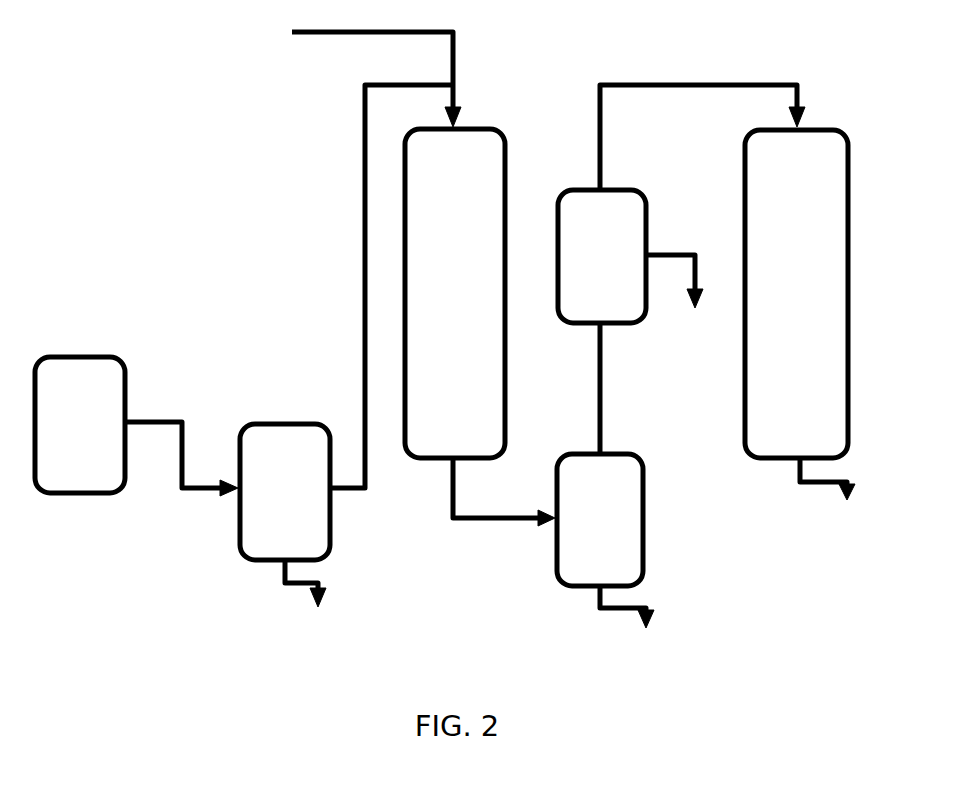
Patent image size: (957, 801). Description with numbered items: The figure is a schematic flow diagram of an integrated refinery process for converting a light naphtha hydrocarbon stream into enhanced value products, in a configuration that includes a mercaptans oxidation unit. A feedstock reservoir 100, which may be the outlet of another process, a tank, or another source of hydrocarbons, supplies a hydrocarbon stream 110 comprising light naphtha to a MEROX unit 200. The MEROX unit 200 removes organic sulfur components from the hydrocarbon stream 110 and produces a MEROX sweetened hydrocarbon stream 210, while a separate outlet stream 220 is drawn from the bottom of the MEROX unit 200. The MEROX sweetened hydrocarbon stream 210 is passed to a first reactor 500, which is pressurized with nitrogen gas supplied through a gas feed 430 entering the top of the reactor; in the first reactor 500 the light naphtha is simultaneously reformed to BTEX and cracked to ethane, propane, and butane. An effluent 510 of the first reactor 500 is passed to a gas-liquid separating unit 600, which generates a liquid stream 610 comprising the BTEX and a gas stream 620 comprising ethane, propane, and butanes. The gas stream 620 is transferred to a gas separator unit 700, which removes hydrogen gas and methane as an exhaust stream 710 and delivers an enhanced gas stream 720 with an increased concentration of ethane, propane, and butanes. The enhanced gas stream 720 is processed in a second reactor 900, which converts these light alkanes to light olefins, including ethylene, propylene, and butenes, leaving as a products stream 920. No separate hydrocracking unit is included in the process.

The feedstock reservoir 100 is at (80, 425).
The hydrocarbon stream 110 is at (181, 479).
The mercaptans oxidation (MEROX) unit 200 is at (285, 492).
The MEROX sweetened hydrocarbon stream 210 is at (382, 286).
The first bottom stream 220 is at (311, 602).
The gas feed 430 is at (348, 75).
The first reactor 500 is at (455, 293).
The effluent 510 is at (504, 509).
The gas-liquid separating unit 600 is at (600, 520).
The liquid stream 610 is at (632, 628).
The gas stream 620 is at (626, 388).
The gas separator unit 700 is at (602, 256).
The exhaust stream 710 is at (680, 300).
The enhanced gas stream 720 is at (702, 137).
The second reactor 900 is at (796, 294).
The products stream 920 is at (845, 495).